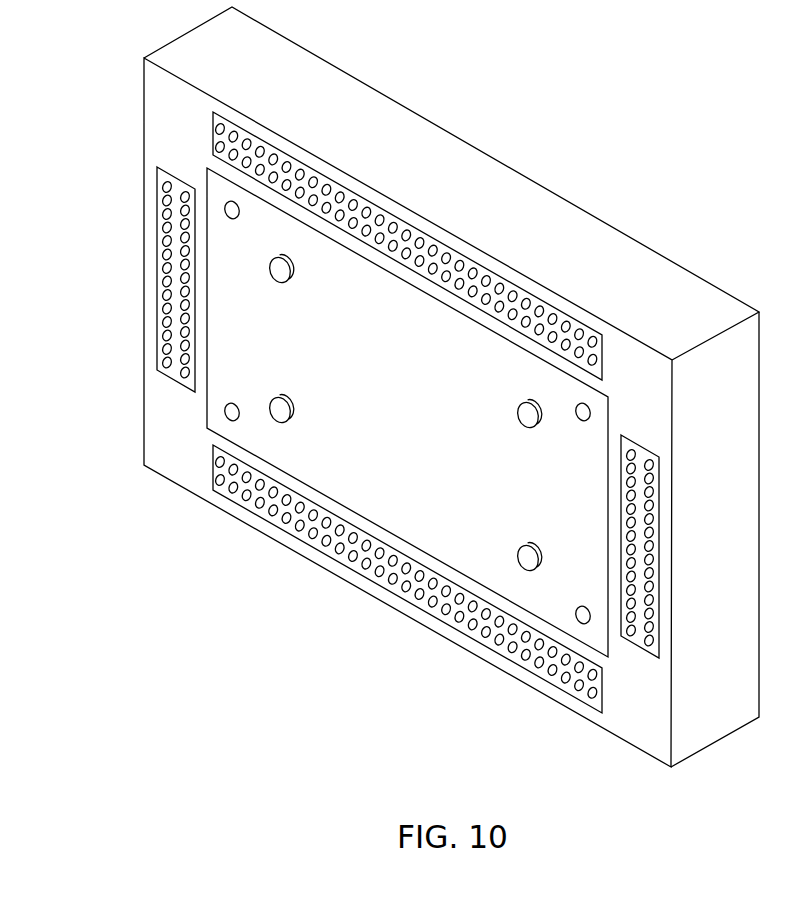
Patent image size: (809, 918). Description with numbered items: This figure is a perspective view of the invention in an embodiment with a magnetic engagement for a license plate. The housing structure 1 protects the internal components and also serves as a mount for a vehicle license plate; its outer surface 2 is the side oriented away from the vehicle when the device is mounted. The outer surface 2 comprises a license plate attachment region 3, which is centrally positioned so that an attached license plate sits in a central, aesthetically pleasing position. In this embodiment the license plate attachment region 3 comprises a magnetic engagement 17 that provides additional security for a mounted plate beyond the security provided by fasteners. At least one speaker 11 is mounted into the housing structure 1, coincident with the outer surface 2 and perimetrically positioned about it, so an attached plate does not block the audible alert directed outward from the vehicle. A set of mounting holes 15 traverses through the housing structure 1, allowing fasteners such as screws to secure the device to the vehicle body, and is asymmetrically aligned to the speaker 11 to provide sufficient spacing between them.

The housing structure 1 is at (143, 46).
The outer surface 2 is at (170, 113).
The license plate attachment region 3 is at (403, 409).
The speaker 11 is at (623, 440).
The set of mounting holes 15 is at (233, 207).
The magnetic engagement 17 is at (283, 420).